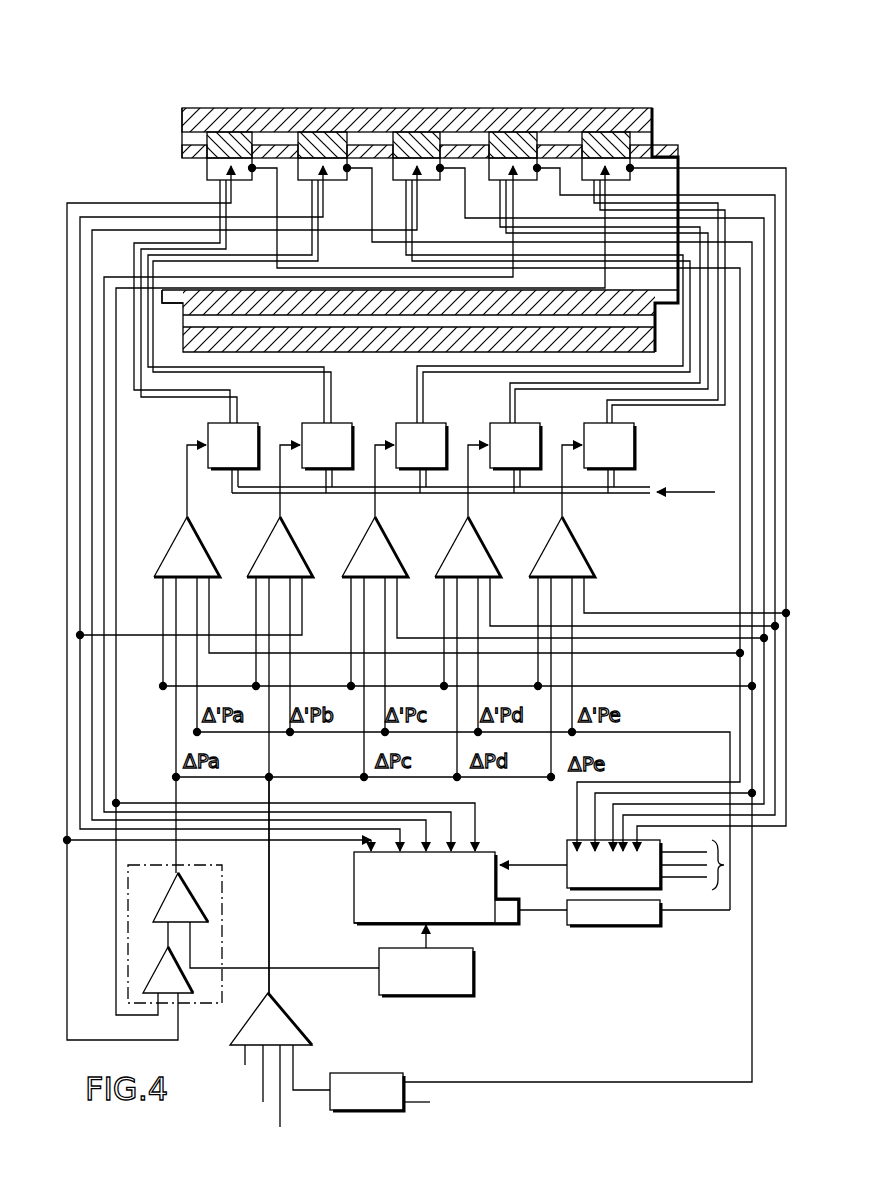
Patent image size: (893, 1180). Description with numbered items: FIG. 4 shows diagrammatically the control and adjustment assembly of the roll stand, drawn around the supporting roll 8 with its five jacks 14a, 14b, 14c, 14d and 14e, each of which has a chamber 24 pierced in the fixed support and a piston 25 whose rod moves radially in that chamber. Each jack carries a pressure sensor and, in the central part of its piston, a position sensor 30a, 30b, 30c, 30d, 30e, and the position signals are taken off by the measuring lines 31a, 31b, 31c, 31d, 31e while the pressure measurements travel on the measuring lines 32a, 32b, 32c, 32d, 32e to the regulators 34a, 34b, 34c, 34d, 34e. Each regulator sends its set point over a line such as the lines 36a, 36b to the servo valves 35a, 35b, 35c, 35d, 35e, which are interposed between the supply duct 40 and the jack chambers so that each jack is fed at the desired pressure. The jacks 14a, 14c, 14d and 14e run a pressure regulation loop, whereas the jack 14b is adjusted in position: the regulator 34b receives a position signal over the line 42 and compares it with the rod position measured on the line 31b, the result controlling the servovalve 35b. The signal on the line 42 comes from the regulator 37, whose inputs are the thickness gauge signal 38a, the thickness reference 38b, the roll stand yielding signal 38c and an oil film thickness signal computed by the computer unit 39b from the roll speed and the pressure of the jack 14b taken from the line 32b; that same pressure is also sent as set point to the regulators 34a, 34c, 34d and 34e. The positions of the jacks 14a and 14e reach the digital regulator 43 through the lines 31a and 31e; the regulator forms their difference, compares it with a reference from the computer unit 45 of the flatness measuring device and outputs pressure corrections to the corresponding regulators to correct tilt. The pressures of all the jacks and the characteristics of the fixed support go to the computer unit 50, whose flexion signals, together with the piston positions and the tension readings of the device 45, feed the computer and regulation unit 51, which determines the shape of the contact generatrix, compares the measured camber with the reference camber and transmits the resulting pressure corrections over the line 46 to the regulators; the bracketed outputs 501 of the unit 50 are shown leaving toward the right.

The supporting roll 8 is at (658, 118).
The jack 14a is at (248, 142).
The jack 14b is at (355, 142).
The jack 14c is at (445, 142).
The jack 14d is at (543, 142).
The jack 14e is at (635, 142).
The chamber 24 is at (205, 160).
The piston 25 is at (205, 163).
The position sensor 30a is at (238, 162).
The position sensor 30b is at (330, 162).
The position sensor 30c is at (425, 162).
The position sensor 30d is at (520, 162).
The position sensor 30e is at (607, 162).
The measuring line 31a is at (78, 203).
The measuring line 31b is at (92, 235).
The measuring line 31c is at (104, 270).
The measuring line 31d is at (116, 305).
The measuring line 31e is at (113, 338).
The measuring line 32a is at (742, 308).
The measuring line 32b is at (752, 275).
The measuring line 32c is at (764, 238).
The measuring line 32d is at (772, 203).
The measuring line 32e is at (770, 175).
The regulator 34a is at (183, 552).
The regulator 34b is at (276, 556).
The regulator 34c is at (371, 552).
The regulator 34d is at (464, 552).
The regulator 34e is at (558, 552).
The servo valve 35a is at (218, 430).
The servovalve 35b is at (318, 430).
The servo valve 35c is at (410, 430).
The servo valve 35d is at (498, 430).
The servo valve 35e is at (598, 430).
The line 36a is at (186, 502).
The line 36b is at (279, 500).
The regulator 37 is at (292, 1025).
The signal from the thickness gauge 38a is at (279, 1081).
The thickness reference 38b is at (266, 1086).
The signal representing the yielding of the roll stand 38c is at (290, 1100).
The computer unit 39b is at (378, 1088).
The supply duct 40 is at (634, 490).
The line 42 is at (268, 880).
The digital regulator 43 is at (222, 905).
The computer unit of the flatness measuring device 45 is at (379, 962).
The line 46 is at (703, 925).
The computer unit 50 is at (567, 850).
The computer and regulation unit 51 is at (370, 878).
The output lines 501 is at (726, 865).